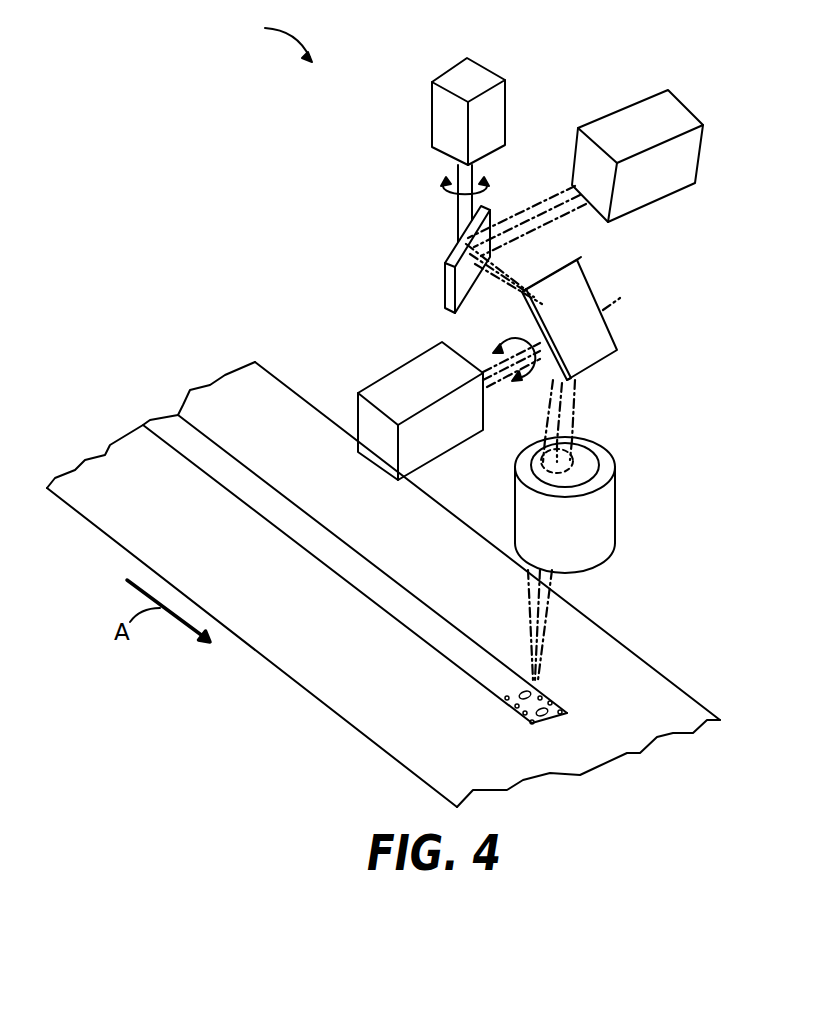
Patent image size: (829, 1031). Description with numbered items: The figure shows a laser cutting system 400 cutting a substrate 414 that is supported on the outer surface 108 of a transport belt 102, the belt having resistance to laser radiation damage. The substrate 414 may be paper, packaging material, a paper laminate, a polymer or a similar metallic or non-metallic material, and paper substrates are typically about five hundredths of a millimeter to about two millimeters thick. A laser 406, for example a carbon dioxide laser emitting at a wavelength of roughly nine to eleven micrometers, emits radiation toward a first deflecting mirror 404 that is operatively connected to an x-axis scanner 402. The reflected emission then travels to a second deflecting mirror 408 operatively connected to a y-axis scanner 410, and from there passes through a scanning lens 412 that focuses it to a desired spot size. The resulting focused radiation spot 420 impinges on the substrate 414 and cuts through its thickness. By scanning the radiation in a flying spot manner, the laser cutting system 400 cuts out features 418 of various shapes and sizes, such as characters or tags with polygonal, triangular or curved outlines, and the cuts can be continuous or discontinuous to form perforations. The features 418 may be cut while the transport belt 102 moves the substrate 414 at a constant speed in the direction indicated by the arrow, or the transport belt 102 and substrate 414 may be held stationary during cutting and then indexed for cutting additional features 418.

The laser cutting system 400 is at (253, 36).
The x-axis scanner 402 is at (450, 67).
The first deflecting mirror 404 is at (445, 282).
The laser 406 is at (662, 197).
The second deflecting mirror 408 is at (607, 326).
The y-axis scanner 410 is at (443, 445).
The scanning lens 412 is at (616, 508).
The substrate 414 is at (418, 640).
The features 418 is at (550, 703).
The focused radiation spot 420 is at (536, 682).
The transport belt 102 is at (290, 678).
The outer surface 108 is at (657, 688).